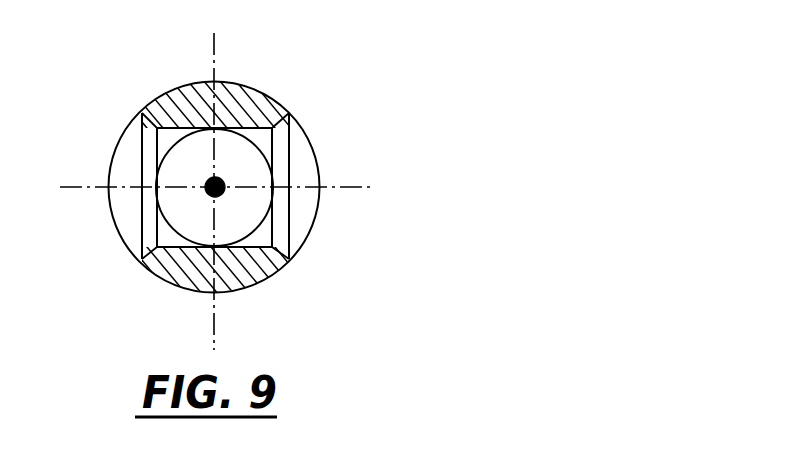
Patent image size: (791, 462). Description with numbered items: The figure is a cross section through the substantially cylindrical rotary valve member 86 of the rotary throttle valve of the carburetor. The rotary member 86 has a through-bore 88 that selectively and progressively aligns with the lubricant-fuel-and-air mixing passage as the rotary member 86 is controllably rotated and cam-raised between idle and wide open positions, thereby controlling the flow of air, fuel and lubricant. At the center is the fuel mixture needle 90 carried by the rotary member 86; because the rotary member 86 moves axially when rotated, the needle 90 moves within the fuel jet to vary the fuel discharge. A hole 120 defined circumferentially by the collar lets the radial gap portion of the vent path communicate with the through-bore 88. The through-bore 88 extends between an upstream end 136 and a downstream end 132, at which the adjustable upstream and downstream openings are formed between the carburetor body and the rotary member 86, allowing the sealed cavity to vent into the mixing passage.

The rotary valve member 86 is at (370, 38).
The through-bore 88 is at (303, 162).
The fuel mixture needle 90 is at (212, 180).
The hole 120 is at (232, 145).
The downstream end 132 is at (300, 217).
The upstream end 136 is at (123, 212).